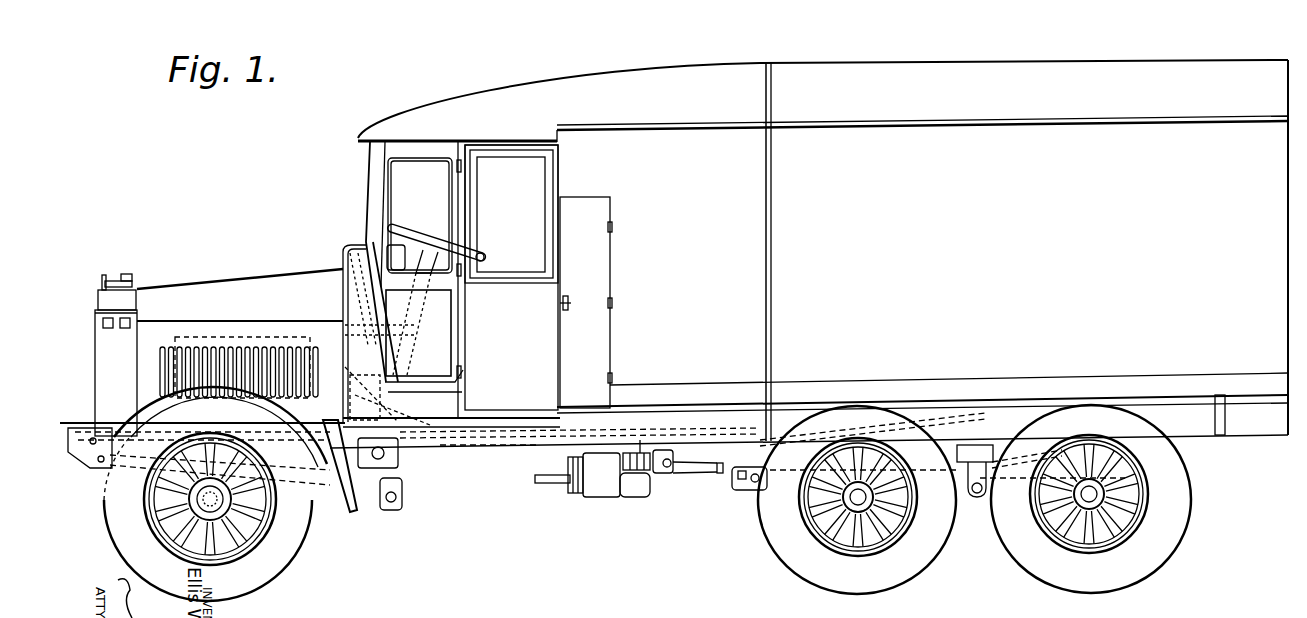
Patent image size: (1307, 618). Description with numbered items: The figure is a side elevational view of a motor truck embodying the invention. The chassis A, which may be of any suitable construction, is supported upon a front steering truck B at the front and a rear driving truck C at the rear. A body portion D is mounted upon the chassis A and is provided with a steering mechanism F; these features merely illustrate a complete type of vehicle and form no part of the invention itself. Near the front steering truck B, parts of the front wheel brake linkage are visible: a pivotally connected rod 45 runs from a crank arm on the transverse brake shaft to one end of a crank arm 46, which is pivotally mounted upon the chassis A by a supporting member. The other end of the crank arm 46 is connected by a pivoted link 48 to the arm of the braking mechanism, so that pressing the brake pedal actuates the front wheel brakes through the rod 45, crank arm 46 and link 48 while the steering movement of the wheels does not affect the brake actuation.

The chassis A is at (674, 421).
The front steering truck B is at (362, 482).
The rear driving truck C is at (942, 483).
The body portion D is at (922, 250).
The steering mechanism F is at (450, 283).
The pivotally connected rod 45 is at (222, 432).
The crank arm 46 is at (178, 432).
The pivoted link 48 is at (238, 455).